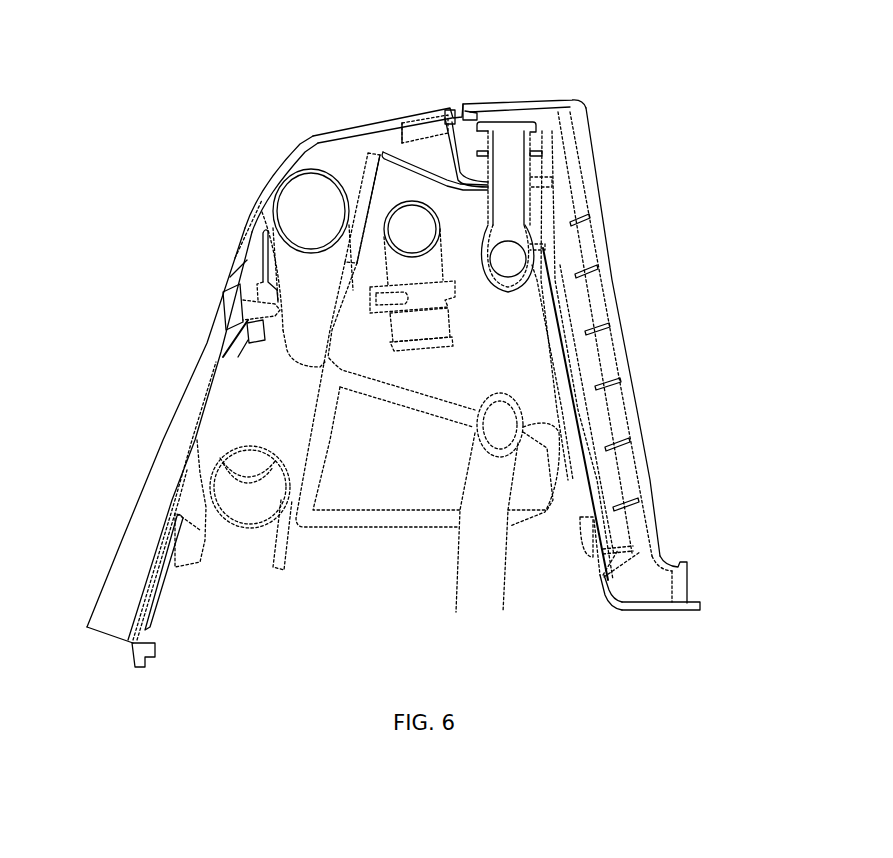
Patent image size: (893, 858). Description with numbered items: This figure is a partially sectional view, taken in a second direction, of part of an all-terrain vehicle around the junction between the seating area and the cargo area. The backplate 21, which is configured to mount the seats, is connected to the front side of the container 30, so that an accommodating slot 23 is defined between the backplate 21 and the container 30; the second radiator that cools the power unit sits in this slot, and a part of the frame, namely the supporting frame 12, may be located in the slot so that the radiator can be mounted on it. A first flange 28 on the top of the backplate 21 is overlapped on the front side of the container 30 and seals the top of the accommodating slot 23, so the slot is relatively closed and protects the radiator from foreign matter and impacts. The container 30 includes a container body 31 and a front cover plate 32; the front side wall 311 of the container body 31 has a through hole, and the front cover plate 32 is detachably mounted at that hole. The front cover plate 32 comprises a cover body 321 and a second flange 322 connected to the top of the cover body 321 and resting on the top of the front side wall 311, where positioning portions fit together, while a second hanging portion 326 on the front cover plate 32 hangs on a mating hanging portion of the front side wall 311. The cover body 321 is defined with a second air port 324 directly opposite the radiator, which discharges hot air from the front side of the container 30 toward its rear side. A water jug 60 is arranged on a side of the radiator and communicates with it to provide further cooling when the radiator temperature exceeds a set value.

The supporting frame 12 is at (310, 228).
The backplate 21 is at (247, 223).
The accommodating slot 23 is at (287, 411).
The first flange 28 is at (357, 123).
The container 30 is at (474, 145).
The container body 31 is at (650, 525).
The front side wall 311 is at (603, 575).
The front cover plate 32 is at (613, 313).
The cover body 321 is at (583, 138).
The second flange 322 is at (480, 116).
The second air port 324 is at (610, 353).
The second hanging portion 326 is at (588, 535).
The water jug 60 is at (467, 298).